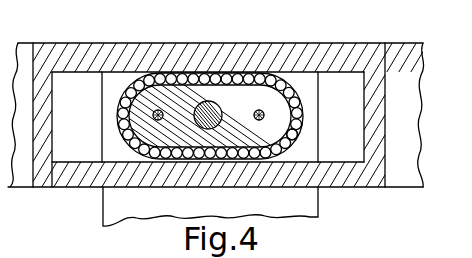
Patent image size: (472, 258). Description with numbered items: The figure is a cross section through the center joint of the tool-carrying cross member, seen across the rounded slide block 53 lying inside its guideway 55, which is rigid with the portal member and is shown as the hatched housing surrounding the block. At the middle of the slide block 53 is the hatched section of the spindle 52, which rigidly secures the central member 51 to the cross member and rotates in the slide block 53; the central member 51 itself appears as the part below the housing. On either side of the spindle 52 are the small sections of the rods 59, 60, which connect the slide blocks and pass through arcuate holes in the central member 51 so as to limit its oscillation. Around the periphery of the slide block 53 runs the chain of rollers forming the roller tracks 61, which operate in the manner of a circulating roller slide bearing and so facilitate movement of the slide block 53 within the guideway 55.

The central member 51 is at (303, 199).
The spindle 52 is at (214, 101).
The slide block 53 is at (136, 120).
The guideway 55 is at (101, 38).
The rod 59 is at (158, 110).
The rod 60 is at (261, 110).
The roller tracks 61 is at (292, 122).